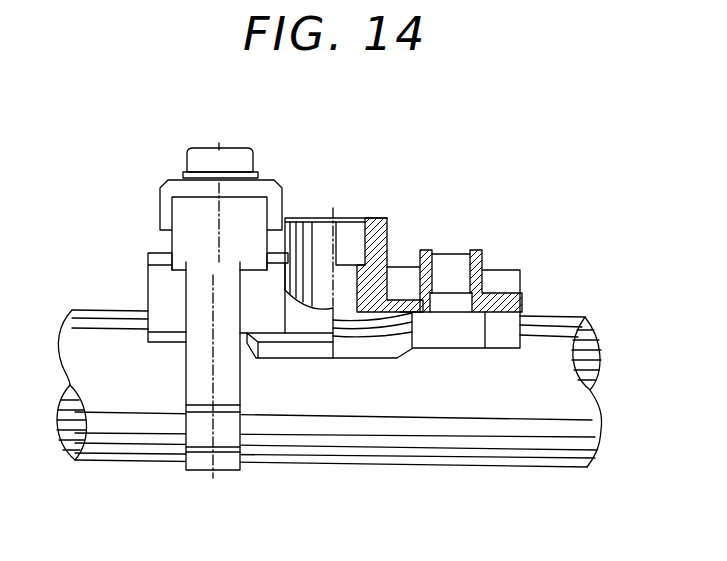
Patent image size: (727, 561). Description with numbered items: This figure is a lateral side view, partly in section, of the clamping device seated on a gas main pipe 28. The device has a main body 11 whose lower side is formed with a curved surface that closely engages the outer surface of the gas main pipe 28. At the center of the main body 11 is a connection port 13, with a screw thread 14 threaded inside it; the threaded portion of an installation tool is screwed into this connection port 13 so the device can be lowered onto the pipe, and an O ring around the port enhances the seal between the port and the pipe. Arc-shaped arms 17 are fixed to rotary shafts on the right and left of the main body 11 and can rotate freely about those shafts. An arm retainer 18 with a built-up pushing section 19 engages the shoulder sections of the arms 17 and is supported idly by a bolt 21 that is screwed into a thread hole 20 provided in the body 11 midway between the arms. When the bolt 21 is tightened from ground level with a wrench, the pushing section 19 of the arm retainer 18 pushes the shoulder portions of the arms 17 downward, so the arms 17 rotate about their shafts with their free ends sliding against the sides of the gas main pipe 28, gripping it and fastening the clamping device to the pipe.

The main body 11 is at (403, 270).
The connection port 13 is at (365, 218).
The screw thread 14 is at (370, 243).
The arc-shaped arm 17 is at (198, 427).
The arm retainer 18 is at (178, 208).
The pushing section 19 is at (182, 245).
The thread hole 20 is at (453, 267).
The bolt 21 is at (202, 160).
The gas main pipe 28 is at (547, 347).